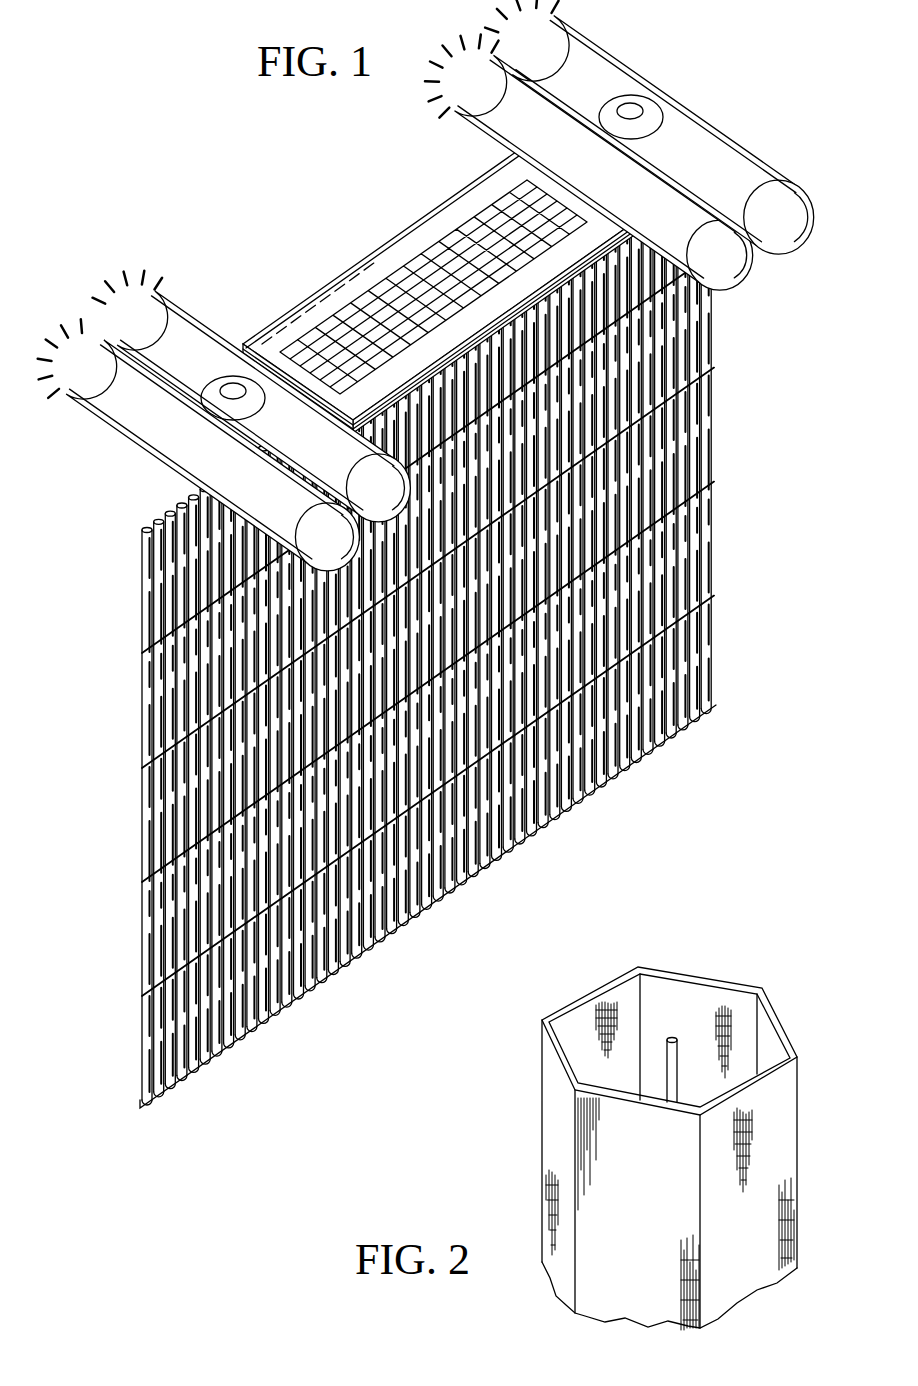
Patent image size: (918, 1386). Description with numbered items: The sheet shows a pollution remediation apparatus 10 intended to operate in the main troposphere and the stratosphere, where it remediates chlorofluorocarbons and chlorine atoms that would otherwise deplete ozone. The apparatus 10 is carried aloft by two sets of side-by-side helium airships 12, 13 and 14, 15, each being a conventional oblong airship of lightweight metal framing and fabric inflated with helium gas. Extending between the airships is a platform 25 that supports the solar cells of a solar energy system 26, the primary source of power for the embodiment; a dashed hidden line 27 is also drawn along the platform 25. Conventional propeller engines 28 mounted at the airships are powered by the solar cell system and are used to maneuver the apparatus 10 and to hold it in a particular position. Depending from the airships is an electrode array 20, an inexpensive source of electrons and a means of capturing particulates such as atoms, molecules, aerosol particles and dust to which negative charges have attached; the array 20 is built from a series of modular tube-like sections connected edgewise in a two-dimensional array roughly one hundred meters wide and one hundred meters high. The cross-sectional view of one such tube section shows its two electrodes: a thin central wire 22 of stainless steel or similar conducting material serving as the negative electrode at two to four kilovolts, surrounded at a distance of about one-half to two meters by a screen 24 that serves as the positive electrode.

In FIG. 1, the pollution remediation apparatus 10 is at (426, 285).
In FIG. 1, the helium airship 12 is at (101, 428).
In FIG. 1, the helium airship 13 is at (193, 313).
In FIG. 1, the helium airship 14 is at (467, 125).
In FIG. 1, the helium airship 15 is at (600, 56).
In FIG. 1, the electrode array 20 is at (93, 756).
In FIG. 2, the central wire 22 is at (673, 1036).
In FIG. 2, the screen 24 is at (600, 986).
In FIG. 1, the platform 25 is at (457, 208).
In FIG. 1, the solar energy system 26 is at (393, 267).
In FIG. 1, the hidden edge 27 is at (312, 300).
In FIG. 1, the propeller engines 28 is at (63, 337).